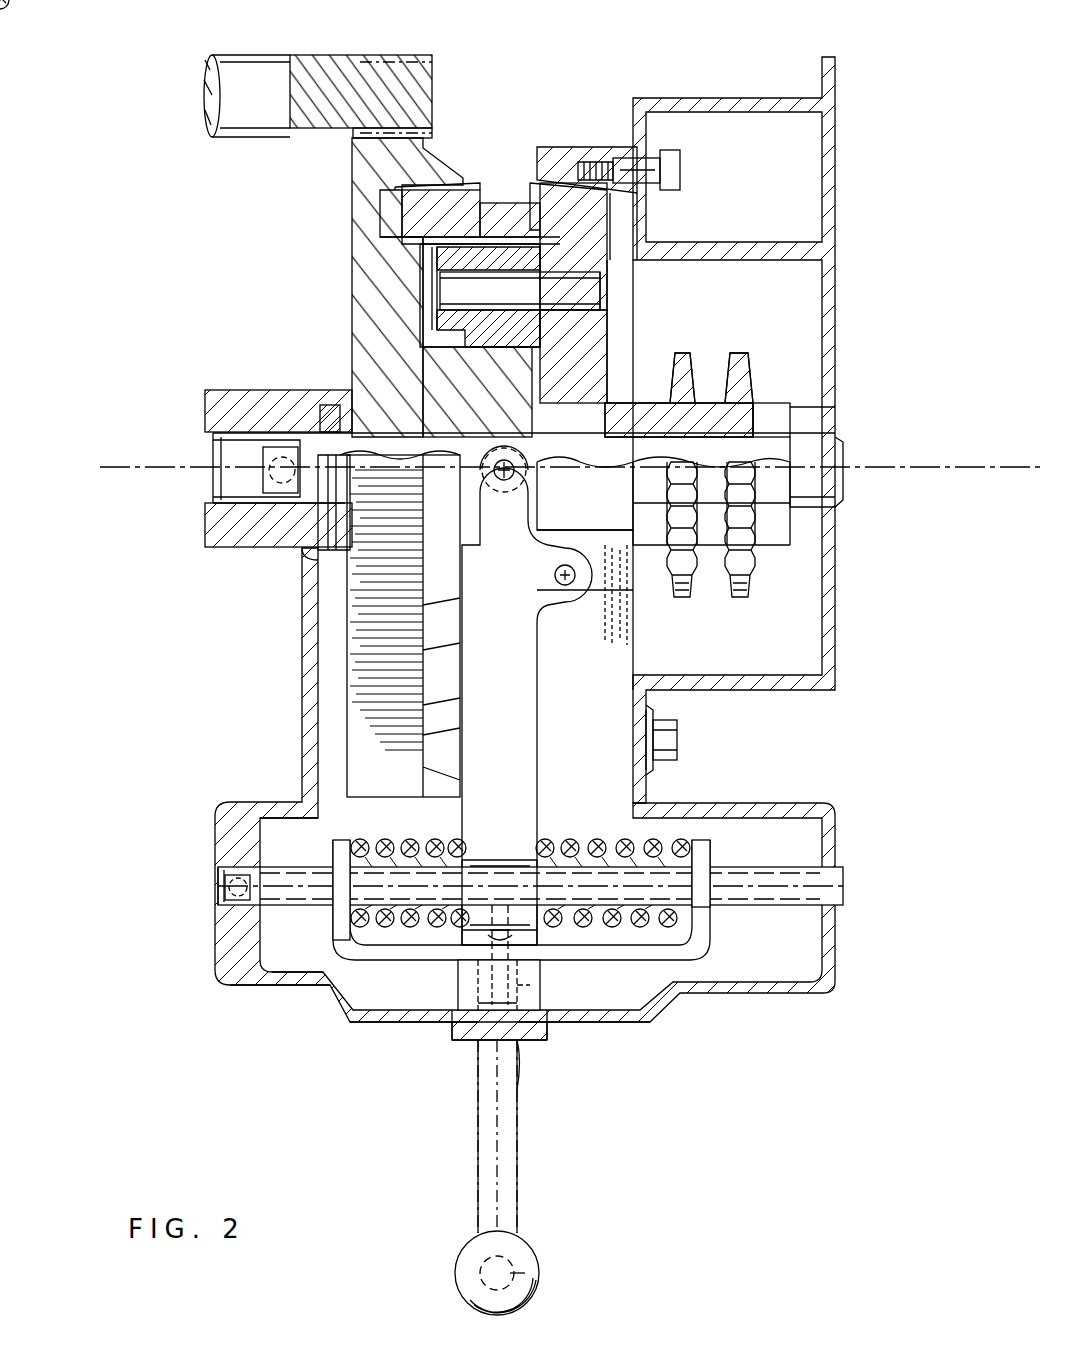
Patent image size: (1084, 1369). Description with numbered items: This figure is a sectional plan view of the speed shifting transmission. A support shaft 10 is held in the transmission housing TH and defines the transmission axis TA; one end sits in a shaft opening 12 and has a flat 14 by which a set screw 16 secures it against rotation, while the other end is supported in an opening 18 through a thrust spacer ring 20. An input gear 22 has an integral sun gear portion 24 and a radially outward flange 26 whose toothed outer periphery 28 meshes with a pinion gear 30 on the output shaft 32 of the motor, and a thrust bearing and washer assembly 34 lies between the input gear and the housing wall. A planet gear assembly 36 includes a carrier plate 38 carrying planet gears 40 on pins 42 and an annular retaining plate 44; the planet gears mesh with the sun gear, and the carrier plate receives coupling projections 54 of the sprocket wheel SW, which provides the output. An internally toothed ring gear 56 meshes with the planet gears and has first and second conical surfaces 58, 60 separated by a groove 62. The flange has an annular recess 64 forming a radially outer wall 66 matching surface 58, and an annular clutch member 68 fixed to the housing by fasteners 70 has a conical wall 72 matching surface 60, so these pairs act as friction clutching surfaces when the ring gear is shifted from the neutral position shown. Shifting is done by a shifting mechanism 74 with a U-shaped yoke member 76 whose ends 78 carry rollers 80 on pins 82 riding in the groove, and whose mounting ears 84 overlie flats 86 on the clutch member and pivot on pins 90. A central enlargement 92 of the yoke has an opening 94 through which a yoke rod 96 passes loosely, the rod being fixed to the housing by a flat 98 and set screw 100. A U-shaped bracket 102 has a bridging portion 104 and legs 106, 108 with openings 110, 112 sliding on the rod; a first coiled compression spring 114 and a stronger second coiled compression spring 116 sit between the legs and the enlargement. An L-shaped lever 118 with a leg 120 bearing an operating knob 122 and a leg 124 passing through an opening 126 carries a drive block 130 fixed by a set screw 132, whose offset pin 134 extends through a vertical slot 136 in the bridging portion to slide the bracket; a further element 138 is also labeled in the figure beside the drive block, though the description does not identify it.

The support shaft 10 is at (400, 470).
The shaft opening 12 is at (214, 438).
The flat 14 is at (278, 447).
The set screw 16 is at (216, 486).
The opening 18 is at (836, 410).
The thrust spacer ring 20 is at (770, 410).
The input gear 22 is at (345, 675).
The sun gear portion 24 is at (414, 397).
The flange 26 is at (362, 246).
The toothed outer periphery 28 is at (404, 133).
The pinion gear 30 is at (374, 56).
The output shaft 32 is at (268, 72).
The thrust bearing and washer assembly 34 is at (304, 556).
The planet gear assembly 36 is at (612, 326).
The carrier plate 38 is at (586, 367).
The planet gears 40 is at (496, 322).
The pins 42 is at (520, 291).
The annular retaining plate 44 is at (452, 262).
The coupling projections 54 is at (580, 440).
The ring gear 56 is at (424, 240).
The first conical surface 58 is at (430, 182).
The second conical surface 60 is at (546, 165).
The groove 62 is at (538, 205).
The annular recess 64 is at (408, 214).
The radially outer wall 66 is at (388, 205).
The clutch member 68 is at (598, 147).
The fasteners 70 is at (666, 170).
The conical wall 72 is at (615, 208).
The shifting mechanism 74 is at (622, 826).
The yoke member 76 is at (488, 669).
The ends 78 is at (490, 492).
The rollers 80 is at (502, 458).
The pins 82 is at (504, 484).
The mounting ears 84 is at (560, 568).
The flats 86 is at (612, 598).
The pins 90 is at (566, 586).
The enlargement 92 is at (540, 884).
The opening 94 is at (470, 884).
The yoke rod 96 is at (292, 906).
The flat 98 is at (220, 882).
The set screw 100 is at (220, 893).
The bracket 102 is at (395, 985).
The bridging portion 104 is at (365, 965).
The leg 106 is at (305, 815).
The leg 108 is at (712, 850).
The opening 110 is at (322, 864).
The opening 112 is at (712, 905).
The first coiled compression spring 114 is at (388, 838).
The second coiled compression spring 116 is at (572, 850).
The lever 118 is at (525, 1240).
The leg 120 is at (528, 1273).
The operating knob 122 is at (470, 1236).
The leg 124 is at (488, 1132).
The opening 126 is at (520, 1062).
The drive block 130 is at (535, 1000).
The set screw 132 is at (542, 990).
The pin 134 is at (500, 930).
The vertical slot 136 is at (472, 974).
The lug 138 is at (456, 1030).
The transmission axis TA is at (558, 443).
The transmission housing TH is at (300, 632).
The sprocket wheel SW is at (698, 345).